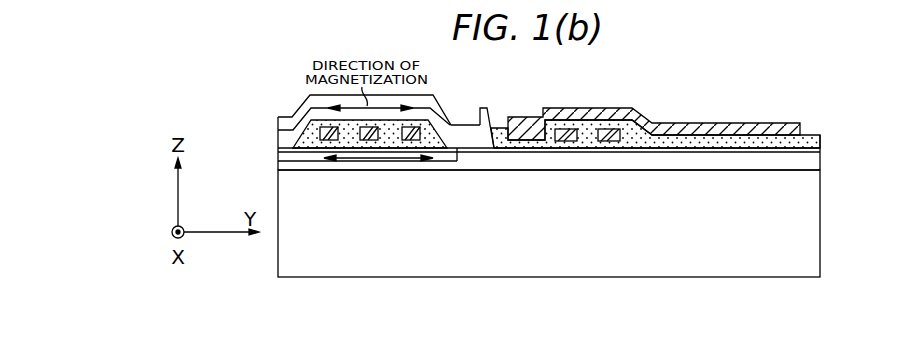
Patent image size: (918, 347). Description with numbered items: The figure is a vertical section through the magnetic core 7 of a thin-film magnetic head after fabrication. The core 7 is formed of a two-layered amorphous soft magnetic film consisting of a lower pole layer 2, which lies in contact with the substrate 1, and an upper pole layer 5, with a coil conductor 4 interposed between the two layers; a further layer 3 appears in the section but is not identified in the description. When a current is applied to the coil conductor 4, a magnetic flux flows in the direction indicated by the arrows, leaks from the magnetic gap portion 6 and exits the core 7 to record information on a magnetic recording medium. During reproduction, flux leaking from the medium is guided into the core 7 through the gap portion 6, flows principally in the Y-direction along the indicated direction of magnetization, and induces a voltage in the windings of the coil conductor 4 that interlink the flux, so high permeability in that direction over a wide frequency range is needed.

The substrate 1 is at (812, 223).
The lower pole layer 2 is at (765, 160).
The insulating layer with coil conductors 3 is at (722, 140).
The coil conductor 4 is at (642, 116).
The upper pole layer 5 is at (465, 128).
The magnetic gap portion 6 is at (270, 144).
The magnetic core 7 is at (387, 163).